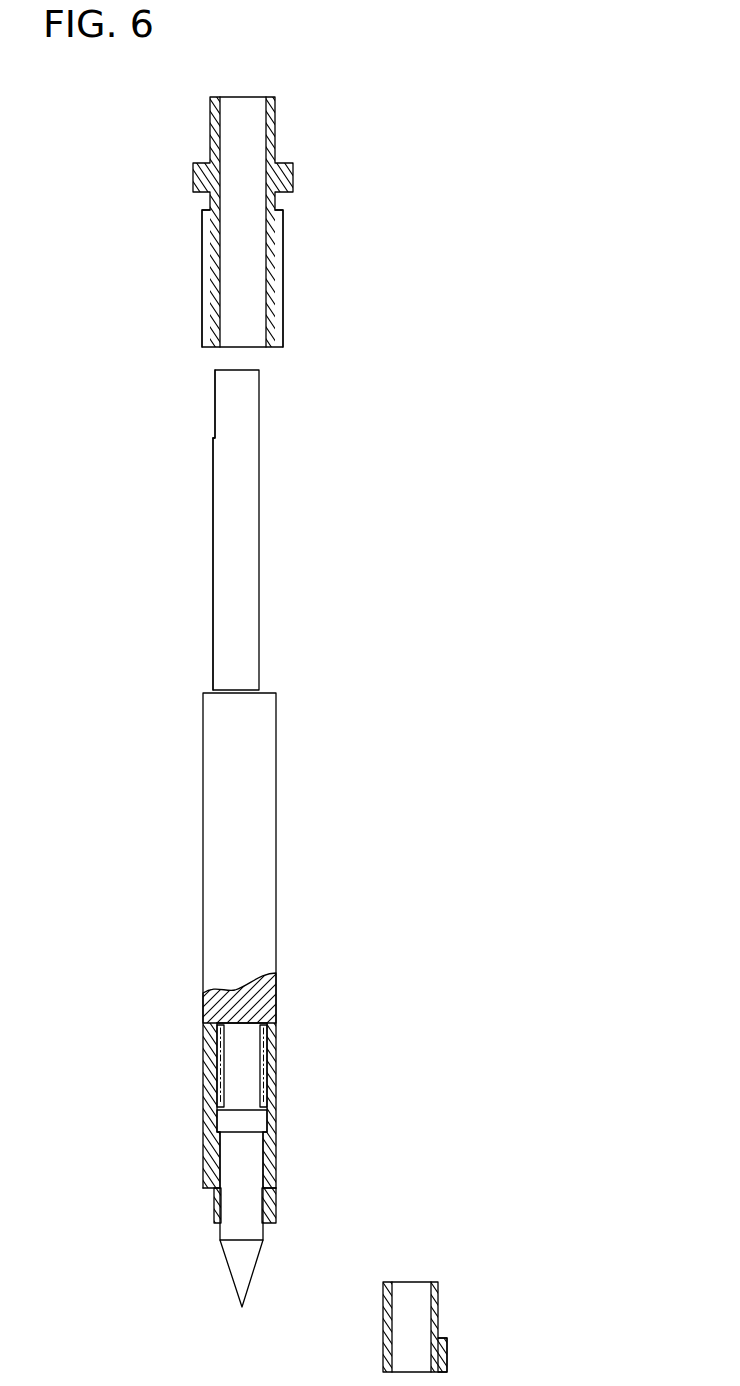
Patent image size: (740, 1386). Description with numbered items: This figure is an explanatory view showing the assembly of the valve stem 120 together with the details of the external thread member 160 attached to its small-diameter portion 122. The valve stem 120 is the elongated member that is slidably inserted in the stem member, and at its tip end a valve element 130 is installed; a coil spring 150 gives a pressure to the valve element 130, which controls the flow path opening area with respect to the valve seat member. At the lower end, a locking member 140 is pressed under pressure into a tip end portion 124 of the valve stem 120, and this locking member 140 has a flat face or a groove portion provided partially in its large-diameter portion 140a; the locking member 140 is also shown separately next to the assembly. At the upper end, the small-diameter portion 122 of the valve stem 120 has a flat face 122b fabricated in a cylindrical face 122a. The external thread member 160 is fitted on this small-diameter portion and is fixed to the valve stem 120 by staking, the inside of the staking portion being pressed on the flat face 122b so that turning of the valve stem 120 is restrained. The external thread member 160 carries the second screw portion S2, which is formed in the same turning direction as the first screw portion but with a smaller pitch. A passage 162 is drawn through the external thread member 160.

The valve stem 120 is at (263, 832).
The small-diameter portion 122 is at (247, 572).
The cylindrical face 122a is at (213, 560).
The flat face 122b is at (215, 412).
The tip end portion 124 is at (277, 1152).
The valve element 130 is at (238, 1230).
The locking member 140 is at (214, 1207).
The large-diameter portion 140a is at (277, 1203).
The coil spring 150 is at (277, 1098).
The external thread member 160 is at (287, 176).
The passage 162 is at (265, 133).
The second screw portion S2 is at (282, 275).